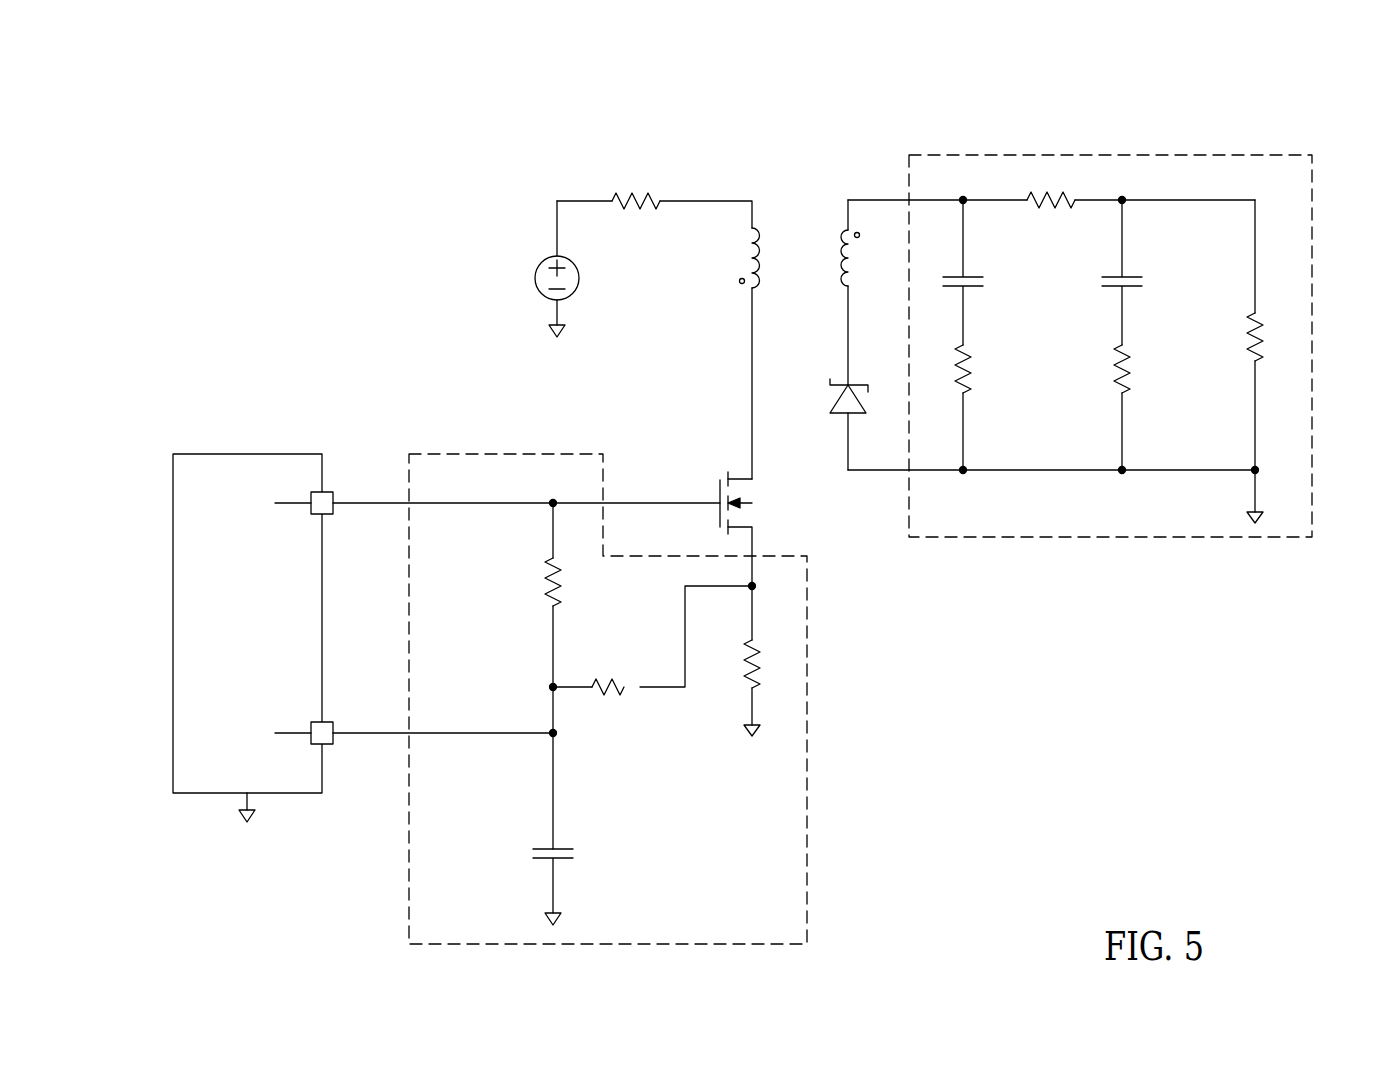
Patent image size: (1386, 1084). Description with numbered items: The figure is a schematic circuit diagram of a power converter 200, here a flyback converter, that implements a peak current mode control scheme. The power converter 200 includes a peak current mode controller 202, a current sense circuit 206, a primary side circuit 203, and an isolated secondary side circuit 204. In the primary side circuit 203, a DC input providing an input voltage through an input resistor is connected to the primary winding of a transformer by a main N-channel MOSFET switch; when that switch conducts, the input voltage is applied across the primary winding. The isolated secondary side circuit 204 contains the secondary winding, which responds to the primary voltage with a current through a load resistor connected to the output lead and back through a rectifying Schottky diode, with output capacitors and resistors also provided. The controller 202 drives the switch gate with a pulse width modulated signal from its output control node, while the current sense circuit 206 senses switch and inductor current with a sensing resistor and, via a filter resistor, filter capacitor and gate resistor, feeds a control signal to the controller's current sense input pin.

The power converter 200 is at (203, 163).
The PCMC controller 202 is at (247, 454).
The primary side circuit 203 is at (658, 147).
The isolated secondary side circuit 204 is at (1098, 155).
The current sense circuit 206 is at (808, 785).